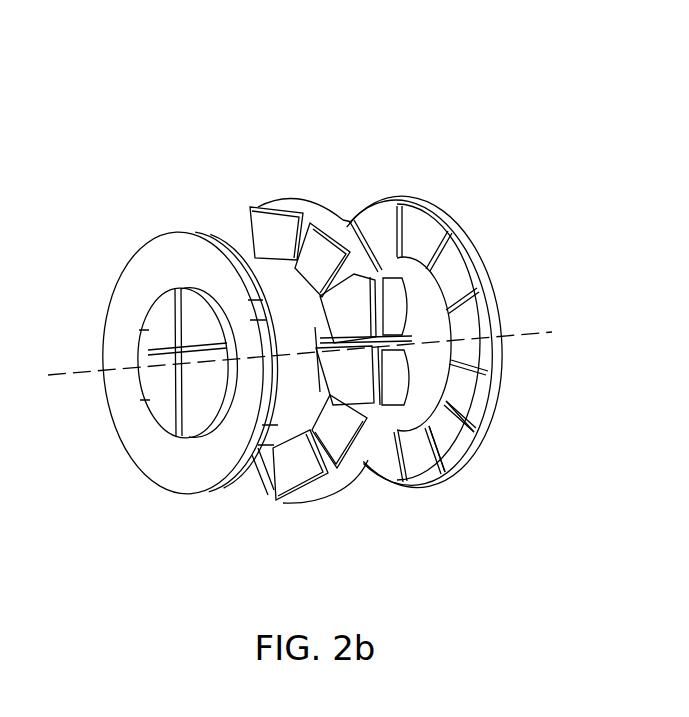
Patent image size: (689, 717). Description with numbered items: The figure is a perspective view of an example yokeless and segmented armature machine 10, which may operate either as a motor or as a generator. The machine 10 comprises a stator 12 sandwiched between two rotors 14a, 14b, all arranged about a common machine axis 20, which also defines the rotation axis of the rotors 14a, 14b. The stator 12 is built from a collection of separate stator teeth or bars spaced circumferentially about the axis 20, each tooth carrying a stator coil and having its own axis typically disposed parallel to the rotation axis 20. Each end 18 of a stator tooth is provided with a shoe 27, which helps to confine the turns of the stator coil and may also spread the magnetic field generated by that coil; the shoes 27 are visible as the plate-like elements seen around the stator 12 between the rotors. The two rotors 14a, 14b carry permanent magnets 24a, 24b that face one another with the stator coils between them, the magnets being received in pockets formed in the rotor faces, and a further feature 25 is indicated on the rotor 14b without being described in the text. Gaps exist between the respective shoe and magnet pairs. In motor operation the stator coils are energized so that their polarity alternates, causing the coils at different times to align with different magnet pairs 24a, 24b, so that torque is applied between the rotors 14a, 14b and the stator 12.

The yokeless and segmented armature (YASA) machine 10 is at (254, 94).
The stator 12 is at (316, 196).
The rotor 14a is at (160, 233).
The rotor 14b is at (430, 203).
The end of stator tooth 18 is at (303, 472).
The machine axis 20 is at (73, 373).
The permanent magnet 24a is at (247, 468).
The permanent magnet 24b is at (448, 438).
The pockets 25 is at (447, 308).
The shoe 27 is at (283, 229).